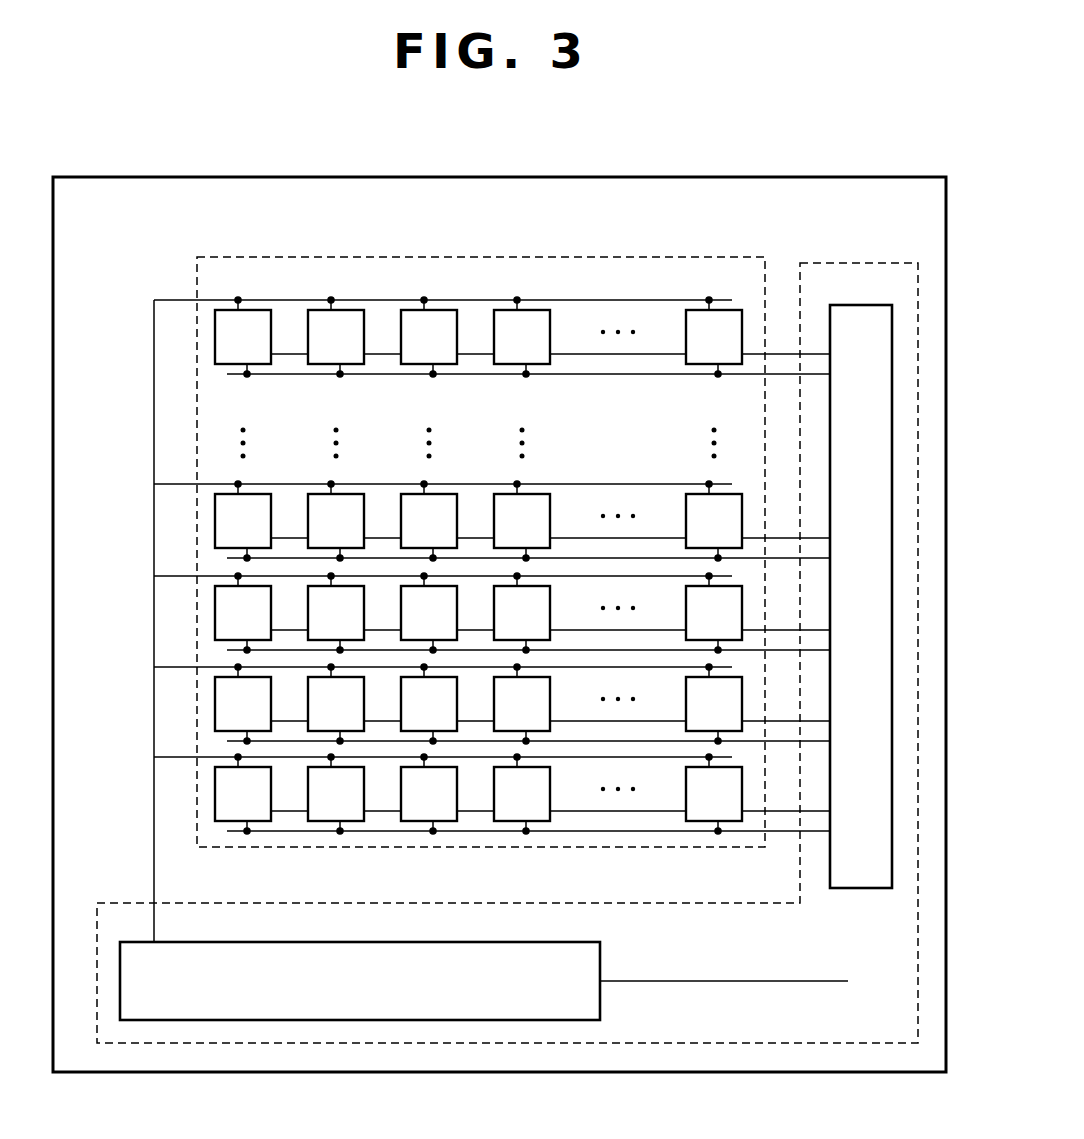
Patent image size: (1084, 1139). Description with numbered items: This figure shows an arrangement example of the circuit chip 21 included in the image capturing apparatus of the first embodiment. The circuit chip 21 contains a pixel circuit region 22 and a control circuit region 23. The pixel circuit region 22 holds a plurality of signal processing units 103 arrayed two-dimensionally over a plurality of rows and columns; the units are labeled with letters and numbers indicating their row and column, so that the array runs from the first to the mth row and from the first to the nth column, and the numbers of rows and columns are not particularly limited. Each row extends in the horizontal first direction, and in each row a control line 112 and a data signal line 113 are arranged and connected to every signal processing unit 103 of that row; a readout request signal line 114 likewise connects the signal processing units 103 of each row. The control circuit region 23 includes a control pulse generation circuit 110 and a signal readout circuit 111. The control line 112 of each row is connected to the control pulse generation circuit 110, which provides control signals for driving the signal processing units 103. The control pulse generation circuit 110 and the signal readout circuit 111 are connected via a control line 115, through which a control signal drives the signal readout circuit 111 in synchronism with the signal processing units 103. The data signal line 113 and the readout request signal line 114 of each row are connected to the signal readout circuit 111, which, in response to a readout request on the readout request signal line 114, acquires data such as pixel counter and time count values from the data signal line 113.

The circuit chip 21 is at (861, 177).
The pixel circuit region 22 is at (562, 257).
The control circuit region 23 is at (857, 263).
The signal processing unit 103 is at (215, 773).
The control pulse generation circuit 110 is at (600, 959).
The signal readout circuit 111 is at (863, 888).
The control line 112 is at (152, 362).
The data signal line 113 is at (785, 832).
The readout request signal line 114 is at (785, 352).
The control line 115 is at (726, 982).